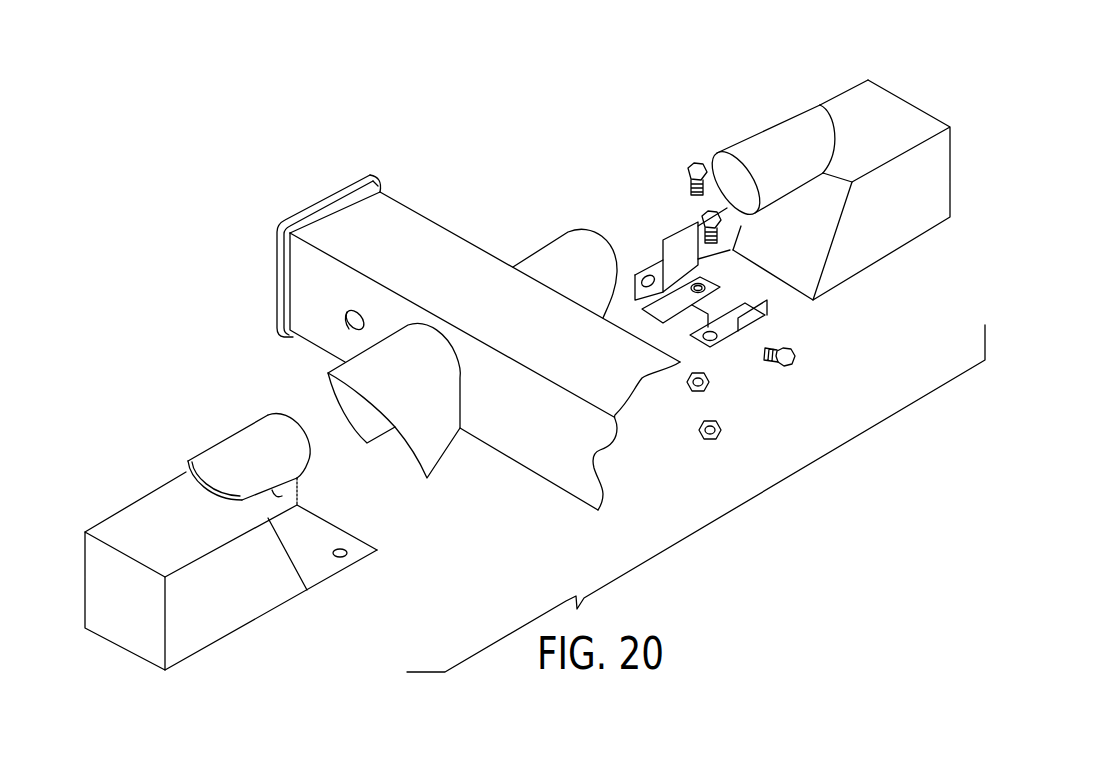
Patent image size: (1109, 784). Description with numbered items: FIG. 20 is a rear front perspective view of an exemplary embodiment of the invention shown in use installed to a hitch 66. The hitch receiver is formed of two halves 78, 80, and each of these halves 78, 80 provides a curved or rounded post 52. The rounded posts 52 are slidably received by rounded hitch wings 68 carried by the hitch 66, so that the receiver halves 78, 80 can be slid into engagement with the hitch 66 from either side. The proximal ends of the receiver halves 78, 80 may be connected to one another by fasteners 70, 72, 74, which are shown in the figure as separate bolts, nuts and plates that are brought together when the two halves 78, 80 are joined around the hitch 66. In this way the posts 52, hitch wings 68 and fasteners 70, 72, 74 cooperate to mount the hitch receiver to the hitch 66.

The rounded post 52 is at (778, 130).
The hitch 66 is at (417, 227).
The rounded hitch wing 68 is at (558, 258).
The fastener 70 is at (688, 180).
The fastener 72 is at (721, 427).
The fastener 74 is at (682, 258).
The hitch receiver half 78 is at (862, 92).
The hitch receiver half 80 is at (138, 517).